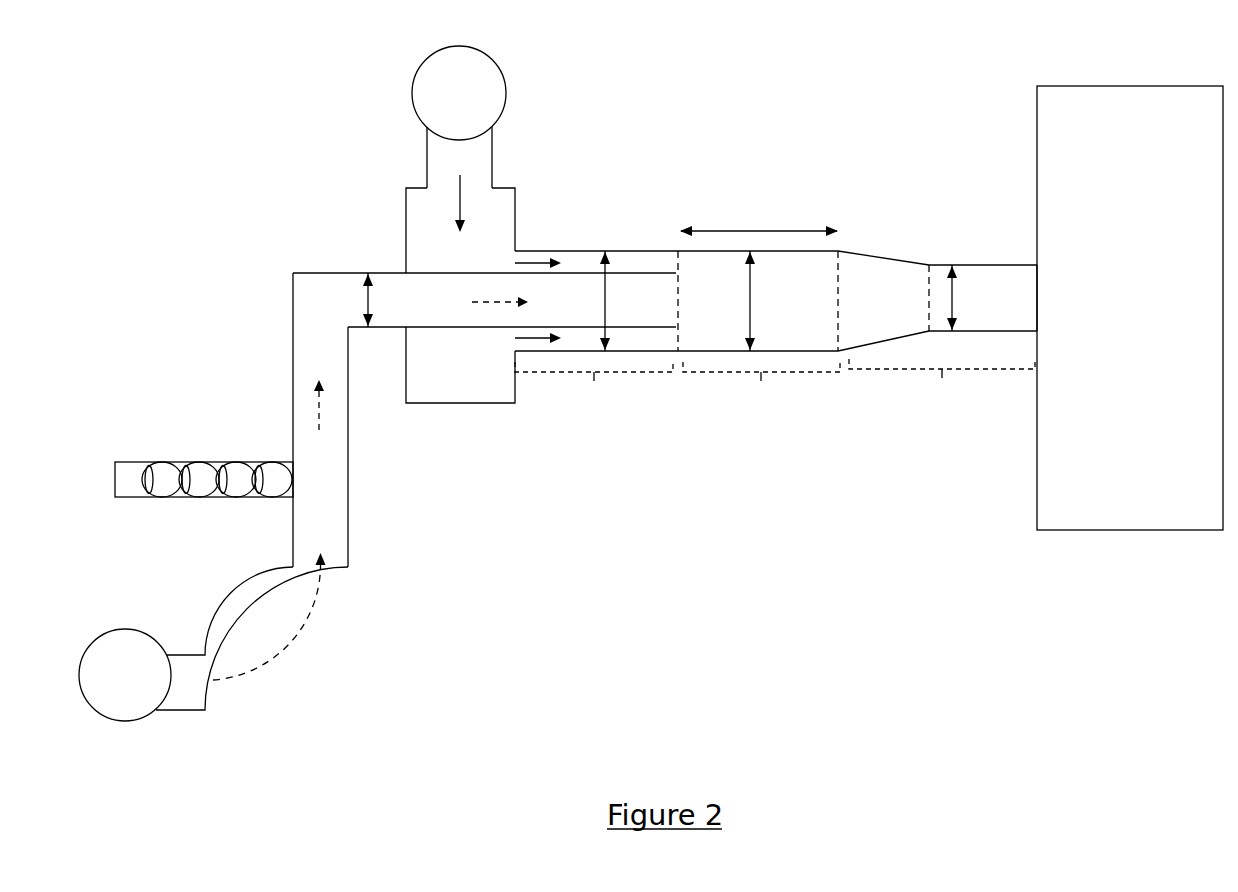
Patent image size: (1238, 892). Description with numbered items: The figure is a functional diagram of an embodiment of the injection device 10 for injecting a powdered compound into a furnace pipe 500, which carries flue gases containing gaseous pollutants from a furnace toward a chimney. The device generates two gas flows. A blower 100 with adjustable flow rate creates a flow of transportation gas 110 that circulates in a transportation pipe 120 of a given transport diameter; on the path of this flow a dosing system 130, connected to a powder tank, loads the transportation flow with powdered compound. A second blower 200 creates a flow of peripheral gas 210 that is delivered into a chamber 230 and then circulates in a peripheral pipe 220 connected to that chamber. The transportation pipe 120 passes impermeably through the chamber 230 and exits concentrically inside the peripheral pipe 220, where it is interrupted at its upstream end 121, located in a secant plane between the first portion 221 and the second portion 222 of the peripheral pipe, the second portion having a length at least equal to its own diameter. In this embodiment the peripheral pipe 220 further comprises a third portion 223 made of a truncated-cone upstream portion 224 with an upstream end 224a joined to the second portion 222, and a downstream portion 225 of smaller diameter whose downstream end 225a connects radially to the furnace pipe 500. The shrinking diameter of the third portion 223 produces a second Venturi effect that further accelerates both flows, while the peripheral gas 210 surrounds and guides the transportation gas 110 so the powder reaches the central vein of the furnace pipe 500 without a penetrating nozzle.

The injection device 10 is at (192, 96).
The blower 100 is at (125, 675).
The transportation gas flow 110 is at (290, 628).
The transportation pipe 120 is at (293, 300).
The upstream end of transportation pipe 121 is at (682, 307).
The dosing system 130 is at (198, 462).
The blower 200 is at (459, 117).
The peripheral gas flow 210 is at (460, 200).
The peripheral pipe 220 is at (647, 251).
The first portion of peripheral pipe 221 is at (594, 390).
The second portion of peripheral pipe 222 is at (761, 390).
The third portion of peripheral pipe 223 is at (942, 387).
The upstream portion of third portion 224 is at (880, 255).
The upstream end of upstream portion 224a is at (840, 305).
The downstream portion of third portion 225 is at (972, 265).
The downstream end of downstream portion 225a is at (1040, 294).
The chamber 230 is at (406, 207).
The furnace pipe 500 is at (1130, 308).